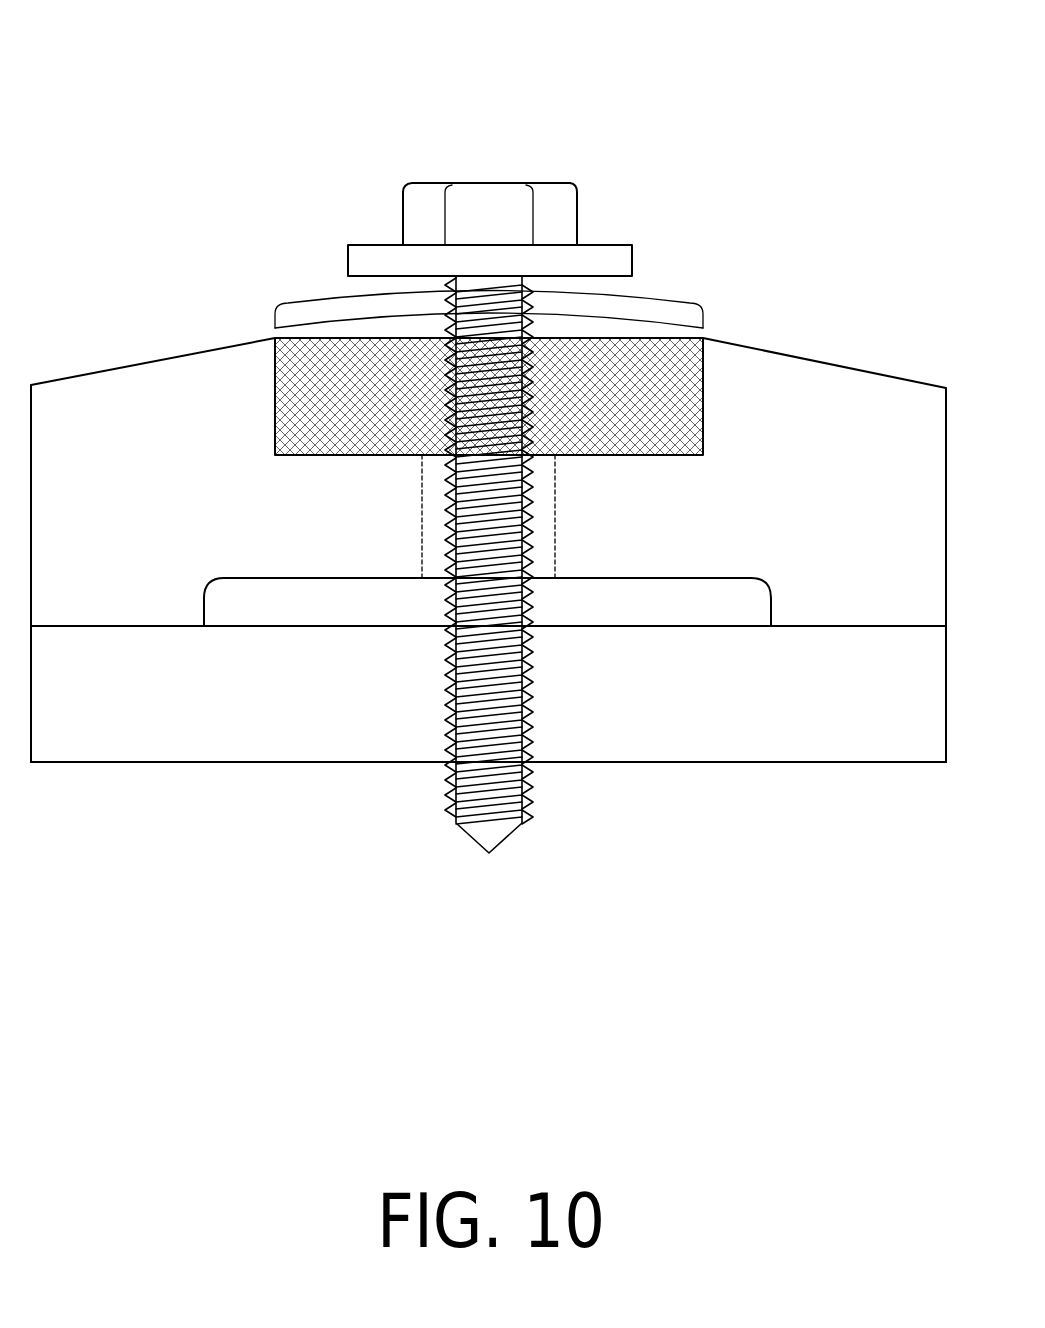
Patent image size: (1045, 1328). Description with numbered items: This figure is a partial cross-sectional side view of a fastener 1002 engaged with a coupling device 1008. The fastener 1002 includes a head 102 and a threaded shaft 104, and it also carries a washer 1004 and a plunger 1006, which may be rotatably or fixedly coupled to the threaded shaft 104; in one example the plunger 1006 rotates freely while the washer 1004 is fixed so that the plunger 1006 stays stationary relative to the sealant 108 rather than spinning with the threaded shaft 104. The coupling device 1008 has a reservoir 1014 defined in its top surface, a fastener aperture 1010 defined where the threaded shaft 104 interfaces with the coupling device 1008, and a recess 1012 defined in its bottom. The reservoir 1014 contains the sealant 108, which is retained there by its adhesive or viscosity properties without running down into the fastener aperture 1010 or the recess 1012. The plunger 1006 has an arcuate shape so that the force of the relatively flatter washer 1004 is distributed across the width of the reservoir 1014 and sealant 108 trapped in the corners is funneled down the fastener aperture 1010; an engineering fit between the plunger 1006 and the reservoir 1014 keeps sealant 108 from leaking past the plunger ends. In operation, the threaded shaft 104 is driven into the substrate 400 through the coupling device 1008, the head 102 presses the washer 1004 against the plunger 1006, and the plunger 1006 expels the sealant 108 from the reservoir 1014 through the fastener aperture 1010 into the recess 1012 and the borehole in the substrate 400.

The head 102 is at (487, 200).
The threaded shaft 104 is at (527, 795).
The sealant 108 is at (370, 388).
The substrate 400 is at (94, 692).
The fastener 1002 is at (551, 176).
The washer 1004 is at (600, 262).
The plunger 1006 is at (678, 305).
The coupling device 1008 is at (125, 422).
The fastener aperture 1010 is at (441, 553).
The recess 1012 is at (295, 597).
The reservoir 1014 is at (672, 384).